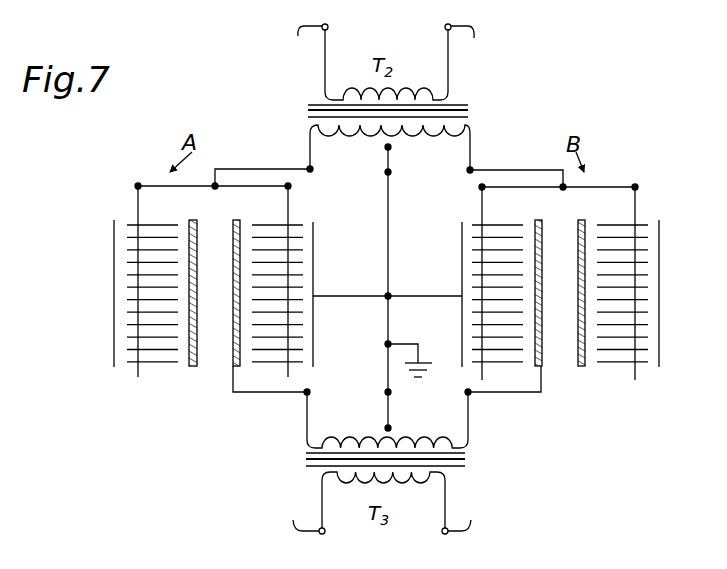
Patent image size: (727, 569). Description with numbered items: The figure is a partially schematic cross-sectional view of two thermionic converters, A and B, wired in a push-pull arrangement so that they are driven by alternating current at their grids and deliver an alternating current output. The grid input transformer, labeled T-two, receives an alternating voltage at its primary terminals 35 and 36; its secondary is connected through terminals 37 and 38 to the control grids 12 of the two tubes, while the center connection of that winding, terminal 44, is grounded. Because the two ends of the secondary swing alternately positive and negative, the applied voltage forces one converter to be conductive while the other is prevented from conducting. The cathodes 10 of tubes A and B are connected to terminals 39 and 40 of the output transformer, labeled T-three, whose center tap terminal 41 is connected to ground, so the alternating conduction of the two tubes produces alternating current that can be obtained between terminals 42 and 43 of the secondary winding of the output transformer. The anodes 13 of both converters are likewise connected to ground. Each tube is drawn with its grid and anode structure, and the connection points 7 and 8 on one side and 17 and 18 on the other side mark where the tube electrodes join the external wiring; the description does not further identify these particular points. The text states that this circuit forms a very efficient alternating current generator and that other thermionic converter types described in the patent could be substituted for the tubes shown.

The junction point of first capacitor bank 7 is at (288, 186).
The input terminal A-side 8 is at (138, 186).
The cathode 10 is at (233, 306).
The control grid 12 is at (158, 363).
The anode 13 is at (313, 258).
The input terminal B-side 17 is at (635, 187).
The junction point of second capacitor bank 18 is at (482, 187).
The terminal 35 is at (304, 42).
The terminal 36 is at (465, 42).
The terminal 37 is at (310, 169).
The terminal 38 is at (470, 170).
The terminal 39 is at (307, 392).
The terminal 40 is at (468, 392).
The center tap terminal 41 is at (388, 392).
The terminal 42 is at (304, 515).
The terminal 43 is at (460, 515).
The terminal 44 is at (388, 172).